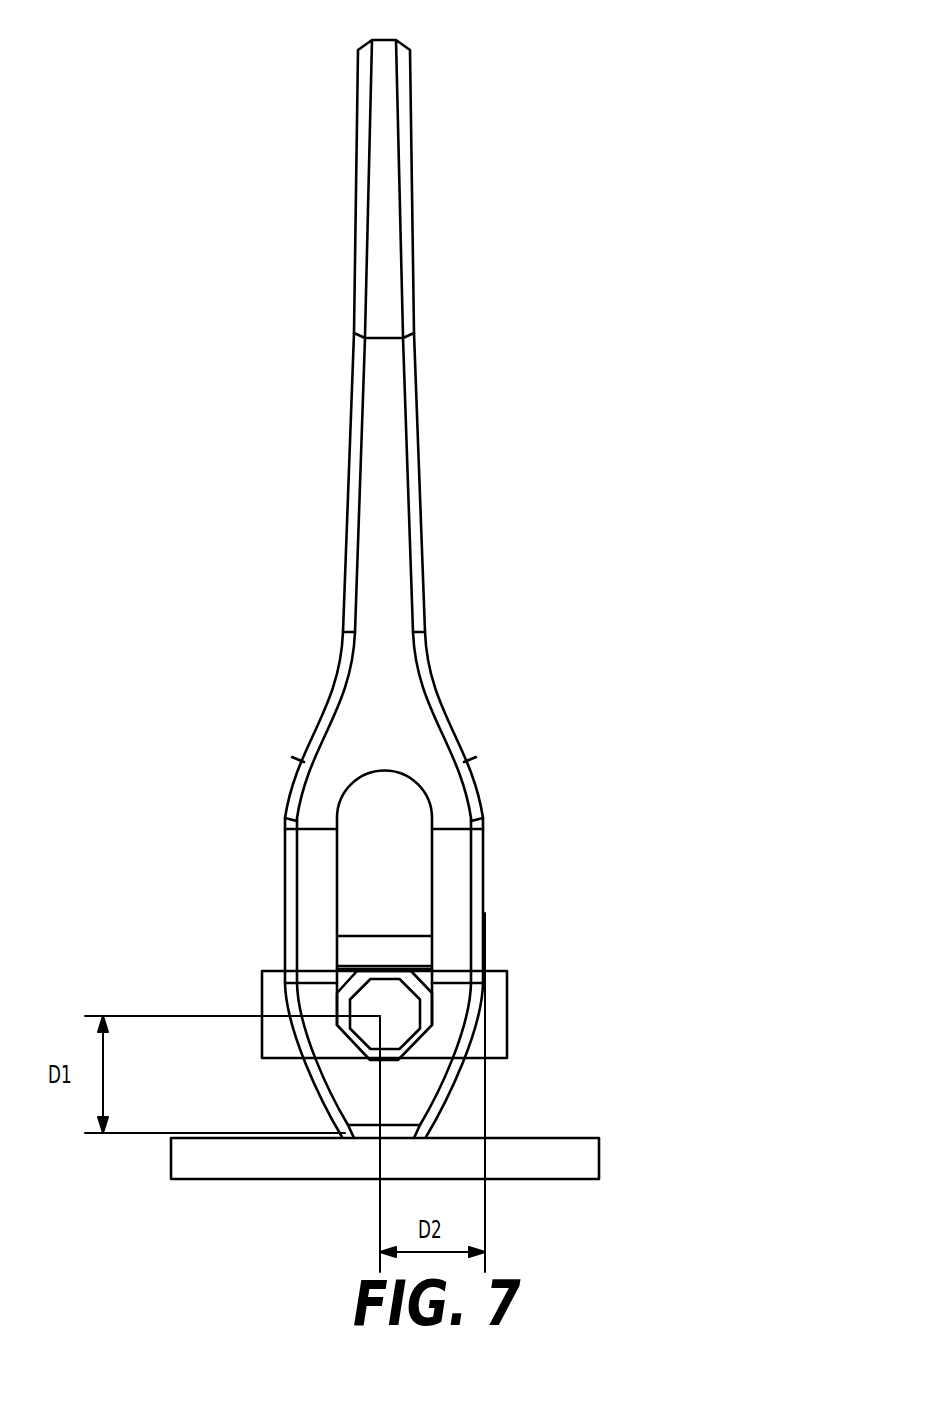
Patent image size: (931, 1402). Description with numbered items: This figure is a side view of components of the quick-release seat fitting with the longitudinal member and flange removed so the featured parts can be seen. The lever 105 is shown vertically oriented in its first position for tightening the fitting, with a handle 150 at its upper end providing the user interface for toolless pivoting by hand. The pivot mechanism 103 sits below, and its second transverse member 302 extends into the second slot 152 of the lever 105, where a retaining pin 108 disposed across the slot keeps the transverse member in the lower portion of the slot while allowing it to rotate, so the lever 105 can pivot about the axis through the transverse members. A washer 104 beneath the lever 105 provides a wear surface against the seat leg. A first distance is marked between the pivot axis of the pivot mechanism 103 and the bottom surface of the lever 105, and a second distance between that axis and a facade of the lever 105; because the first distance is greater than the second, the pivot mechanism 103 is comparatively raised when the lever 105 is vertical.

The handle 150 is at (387, 123).
The lever 105 is at (385, 458).
The second slot 152 is at (403, 853).
The retaining pin 108 is at (403, 950).
The second transverse member 302 is at (398, 1000).
The pivot mechanism 103 is at (498, 1036).
The washer 104 is at (577, 1157).